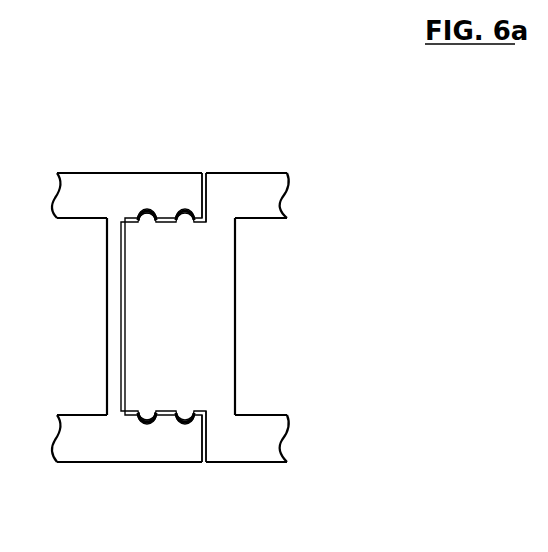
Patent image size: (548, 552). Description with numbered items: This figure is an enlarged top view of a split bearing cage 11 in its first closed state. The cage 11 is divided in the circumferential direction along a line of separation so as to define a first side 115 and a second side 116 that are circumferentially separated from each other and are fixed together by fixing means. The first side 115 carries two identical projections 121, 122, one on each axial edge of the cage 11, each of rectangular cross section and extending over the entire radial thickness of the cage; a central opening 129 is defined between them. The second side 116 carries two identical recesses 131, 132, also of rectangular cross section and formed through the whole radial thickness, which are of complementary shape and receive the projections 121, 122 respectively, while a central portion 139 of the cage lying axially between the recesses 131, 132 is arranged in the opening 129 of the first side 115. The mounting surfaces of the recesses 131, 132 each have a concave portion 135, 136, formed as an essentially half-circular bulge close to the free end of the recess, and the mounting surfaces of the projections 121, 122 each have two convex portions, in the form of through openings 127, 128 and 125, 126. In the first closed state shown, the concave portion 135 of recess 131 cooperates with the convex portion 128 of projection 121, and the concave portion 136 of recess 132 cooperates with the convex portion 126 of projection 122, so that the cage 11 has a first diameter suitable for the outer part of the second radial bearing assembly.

The cage 11 is at (182, 317).
The first side 115 is at (106, 357).
The second side 116 is at (235, 173).
The projection 121 is at (166, 462).
The projection 122 is at (163, 173).
The convex portion 125 is at (185, 226).
The convex portion 126 is at (147, 221).
The convex portion 127 is at (184, 412).
The convex portion 128 is at (147, 412).
The central opening 129 is at (125, 291).
The recess 131 is at (203, 440).
The recess 132 is at (201, 205).
The concave portion 135 is at (147, 427).
The concave portion 136 is at (147, 208).
The central portion 139 is at (173, 317).